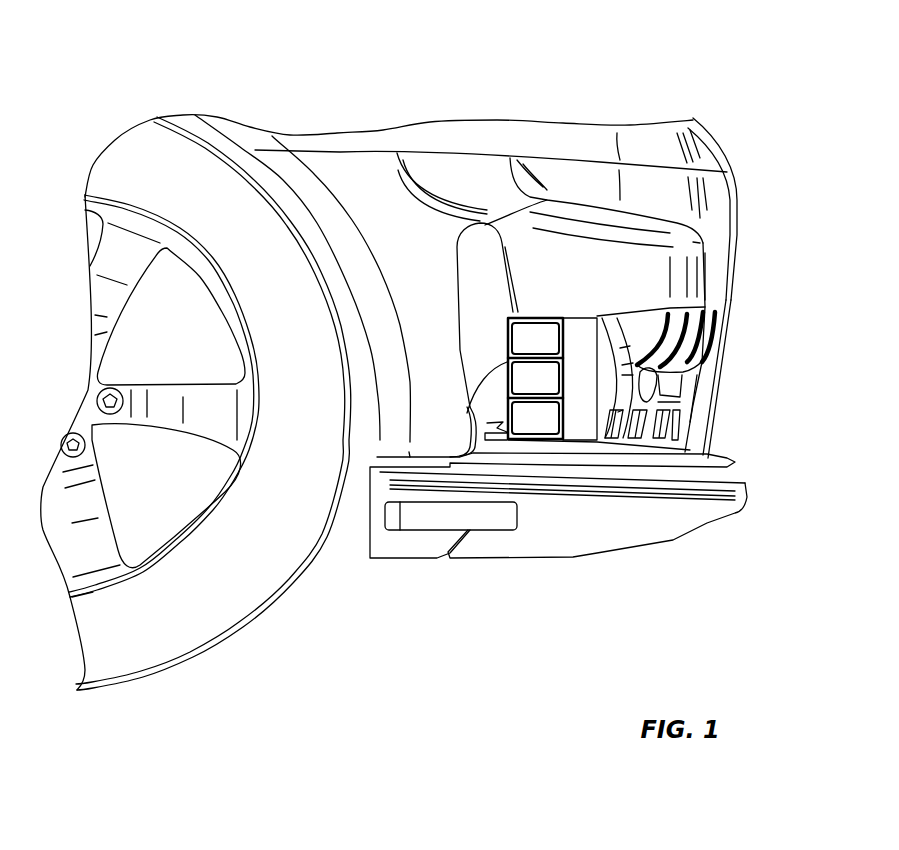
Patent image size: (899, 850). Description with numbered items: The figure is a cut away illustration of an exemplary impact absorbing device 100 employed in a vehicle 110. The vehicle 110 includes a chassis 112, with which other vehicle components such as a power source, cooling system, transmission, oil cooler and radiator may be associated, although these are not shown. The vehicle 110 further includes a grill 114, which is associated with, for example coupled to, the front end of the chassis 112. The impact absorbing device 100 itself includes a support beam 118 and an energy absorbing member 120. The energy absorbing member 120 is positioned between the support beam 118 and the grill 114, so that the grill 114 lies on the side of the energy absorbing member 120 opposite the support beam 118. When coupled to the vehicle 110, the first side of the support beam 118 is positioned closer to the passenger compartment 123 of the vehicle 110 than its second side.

The impact absorbing device 100 is at (735, 395).
The vehicle 110 is at (625, 80).
The chassis 112 is at (352, 145).
The grill 114 is at (732, 342).
The support beam 118 is at (572, 398).
The energy absorbing member 120 is at (680, 326).
The passenger compartment 123 is at (126, 66).